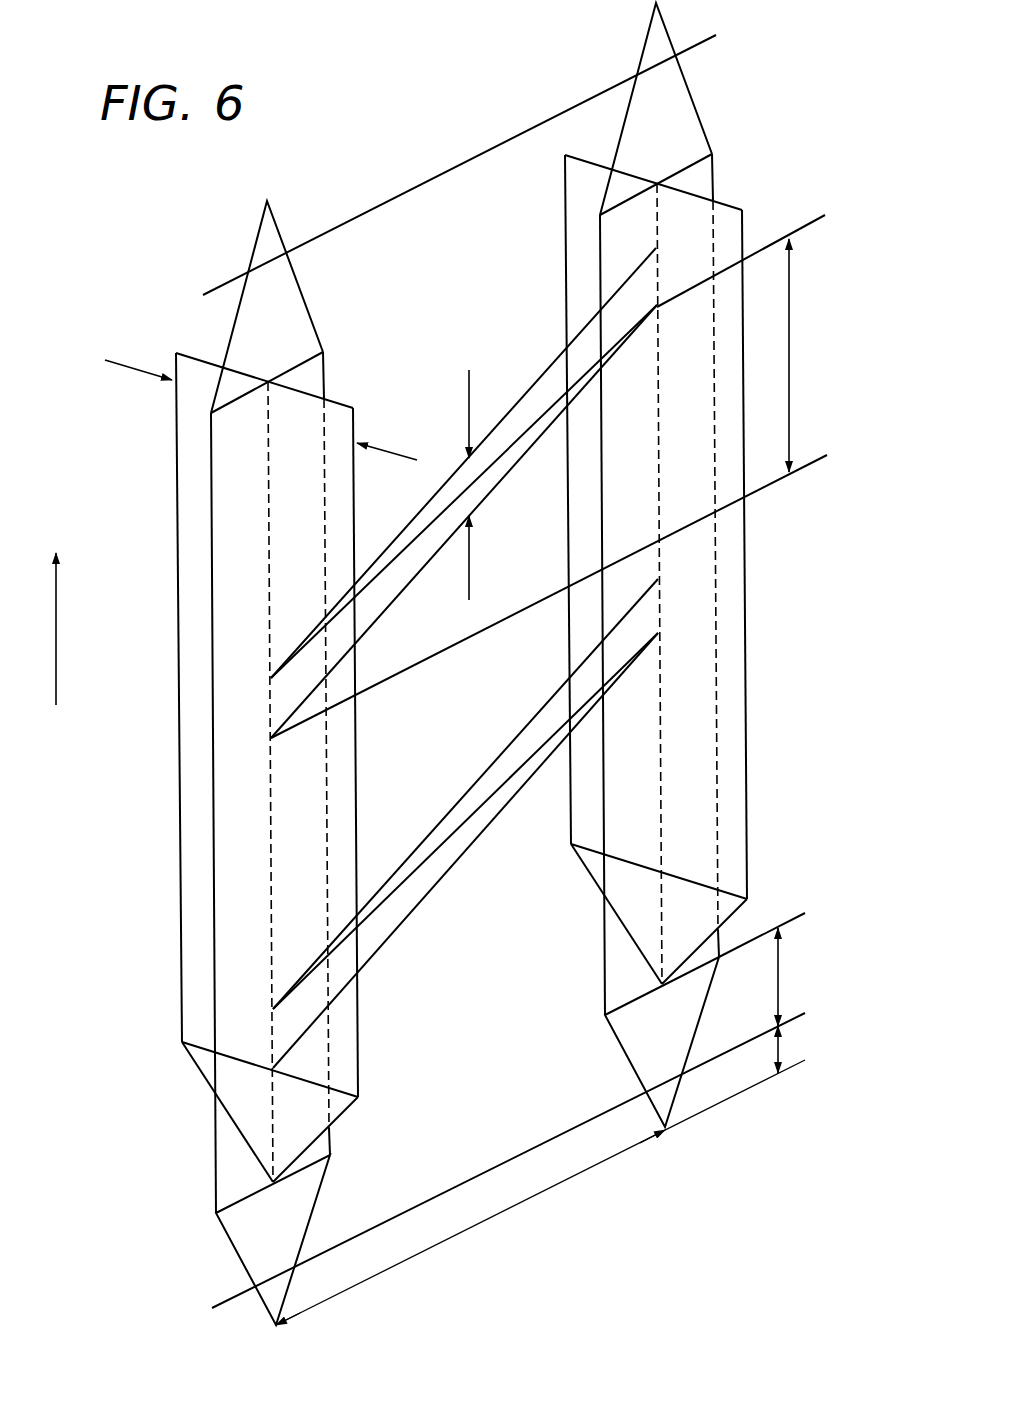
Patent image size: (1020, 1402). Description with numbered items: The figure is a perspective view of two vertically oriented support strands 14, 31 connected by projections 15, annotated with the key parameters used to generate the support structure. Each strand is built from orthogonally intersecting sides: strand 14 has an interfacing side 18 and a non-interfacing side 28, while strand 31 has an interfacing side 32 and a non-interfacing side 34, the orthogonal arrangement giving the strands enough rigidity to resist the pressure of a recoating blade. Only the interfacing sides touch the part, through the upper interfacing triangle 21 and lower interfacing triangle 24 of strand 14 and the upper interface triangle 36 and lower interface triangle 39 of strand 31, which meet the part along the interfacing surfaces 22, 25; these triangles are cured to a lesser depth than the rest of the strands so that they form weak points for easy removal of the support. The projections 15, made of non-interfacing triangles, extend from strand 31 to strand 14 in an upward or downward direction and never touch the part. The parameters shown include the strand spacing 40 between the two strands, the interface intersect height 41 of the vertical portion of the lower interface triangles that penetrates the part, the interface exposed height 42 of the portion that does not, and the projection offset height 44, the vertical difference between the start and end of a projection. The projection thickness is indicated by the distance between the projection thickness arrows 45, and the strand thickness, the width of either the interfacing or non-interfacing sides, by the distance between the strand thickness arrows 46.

The strand 14 is at (783, 165).
The projections 15 is at (388, 543).
The interfacing side 18 is at (623, 985).
The upper interfacing triangle 21 is at (683, 123).
The lower interfacing surface 22 is at (692, 43).
The lower interfacing triangle 24 is at (625, 1045).
The upper interfacing surface 25 is at (492, 1168).
The non-interfacing side 28 is at (674, 565).
The strand 31 is at (107, 468).
The interfacing side 32 is at (223, 1183).
The non-interfacing side 34 is at (225, 763).
The upper interface triangle 36 is at (298, 315).
The lower interface triangle 39 is at (243, 1230).
The strand spacing 40 is at (441, 1243).
The interface intersect height 41 is at (790, 1050).
The interface exposed height 42 is at (790, 968).
The projection offset height 44 is at (789, 354).
The projection thickness arrows 45 is at (470, 397).
The strand thickness arrows 46 is at (125, 365).